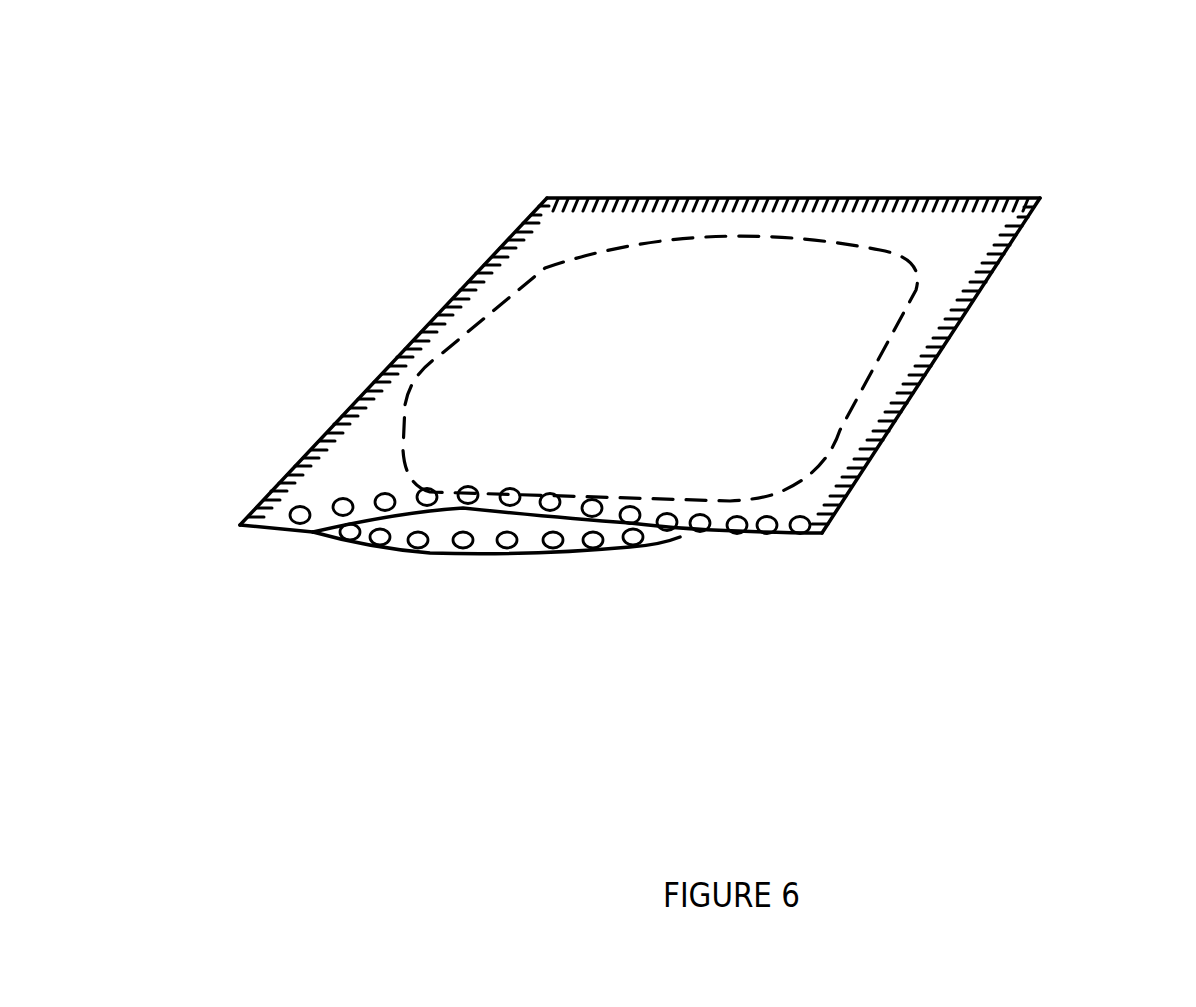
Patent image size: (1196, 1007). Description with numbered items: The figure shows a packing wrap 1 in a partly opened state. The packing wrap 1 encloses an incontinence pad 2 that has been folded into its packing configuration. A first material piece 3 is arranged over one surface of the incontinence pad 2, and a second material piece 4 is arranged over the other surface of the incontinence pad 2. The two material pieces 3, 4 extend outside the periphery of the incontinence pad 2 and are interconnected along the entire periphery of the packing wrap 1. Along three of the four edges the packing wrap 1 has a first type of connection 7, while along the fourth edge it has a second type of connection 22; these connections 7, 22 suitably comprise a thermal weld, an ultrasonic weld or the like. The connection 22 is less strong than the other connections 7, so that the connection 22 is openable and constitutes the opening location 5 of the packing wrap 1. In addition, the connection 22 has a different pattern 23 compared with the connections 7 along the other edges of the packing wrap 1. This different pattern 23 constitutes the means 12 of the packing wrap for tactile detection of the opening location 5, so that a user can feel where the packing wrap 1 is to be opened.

The packing wrap 1 is at (923, 240).
The incontinence pad 2 is at (823, 343).
The first material piece 3 is at (833, 227).
The second material piece 4 is at (683, 265).
The opening location 5 is at (463, 555).
The first type of connection 7 is at (462, 280).
The means for tactile detection 12 is at (337, 543).
The second type of connection 22 is at (705, 535).
The different pattern 23 is at (543, 520).